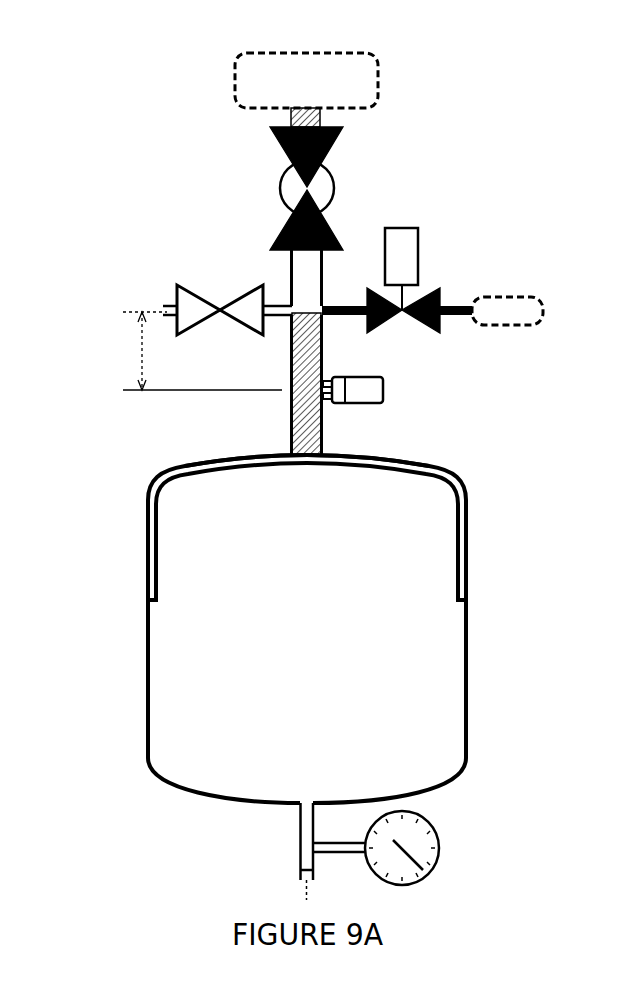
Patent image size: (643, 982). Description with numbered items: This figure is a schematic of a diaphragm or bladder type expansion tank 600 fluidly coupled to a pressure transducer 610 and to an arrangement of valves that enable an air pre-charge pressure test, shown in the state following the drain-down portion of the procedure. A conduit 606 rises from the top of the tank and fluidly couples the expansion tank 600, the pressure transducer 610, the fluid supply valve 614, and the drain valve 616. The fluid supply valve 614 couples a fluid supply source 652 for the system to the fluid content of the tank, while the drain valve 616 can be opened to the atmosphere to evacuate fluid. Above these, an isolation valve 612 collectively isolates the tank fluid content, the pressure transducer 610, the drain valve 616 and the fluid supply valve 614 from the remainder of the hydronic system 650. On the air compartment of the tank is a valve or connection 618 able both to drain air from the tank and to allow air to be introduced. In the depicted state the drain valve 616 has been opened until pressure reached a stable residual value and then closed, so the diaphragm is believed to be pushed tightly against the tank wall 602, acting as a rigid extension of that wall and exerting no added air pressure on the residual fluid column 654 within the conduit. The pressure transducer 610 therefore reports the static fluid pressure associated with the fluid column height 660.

The expansion tank 600 is at (452, 477).
The tank wall 602 is at (310, 465).
The conduit 606 is at (290, 407).
The fluid column 654 is at (302, 367).
The hydronic system 650 is at (235, 80).
The isolation valve 612 is at (282, 182).
The drain valve 616 is at (250, 292).
The fluid column height H1 660 is at (85, 352).
The fluid supply valve 614 is at (385, 322).
The fluid supply source 652 is at (525, 297).
The pressure transducer 610 is at (352, 405).
The valve or connection 618 is at (300, 870).